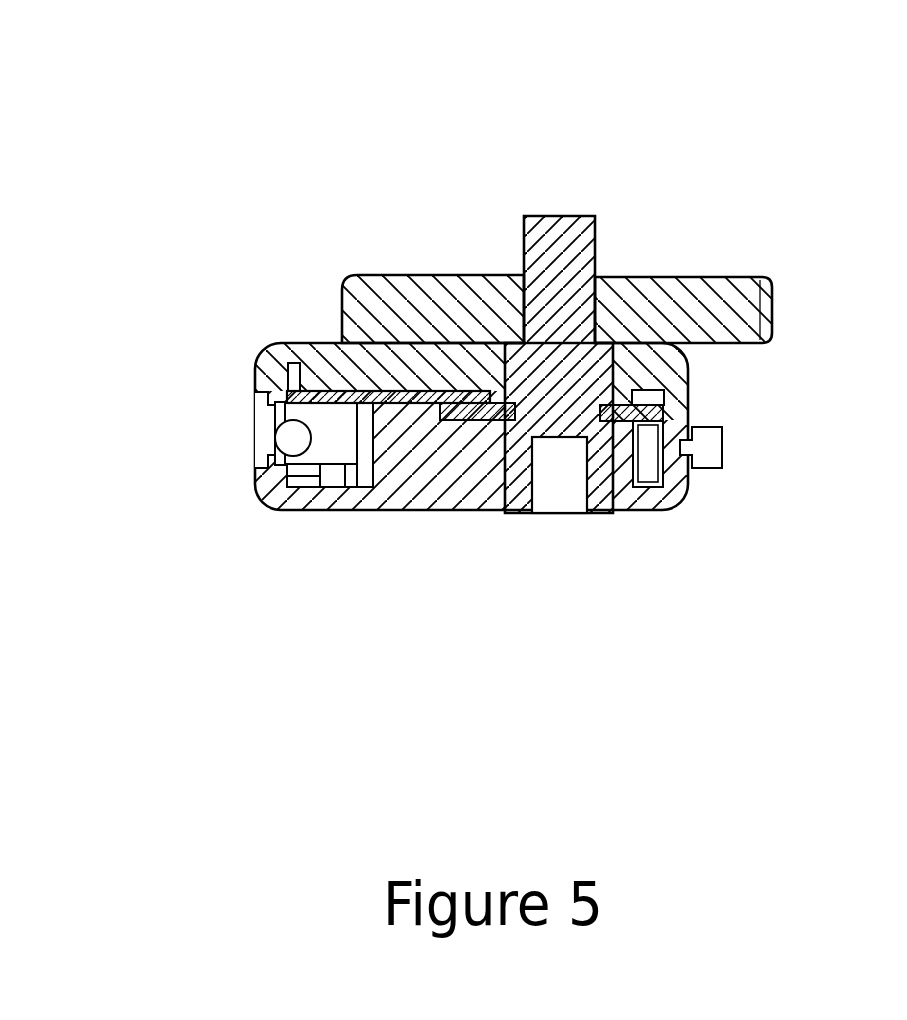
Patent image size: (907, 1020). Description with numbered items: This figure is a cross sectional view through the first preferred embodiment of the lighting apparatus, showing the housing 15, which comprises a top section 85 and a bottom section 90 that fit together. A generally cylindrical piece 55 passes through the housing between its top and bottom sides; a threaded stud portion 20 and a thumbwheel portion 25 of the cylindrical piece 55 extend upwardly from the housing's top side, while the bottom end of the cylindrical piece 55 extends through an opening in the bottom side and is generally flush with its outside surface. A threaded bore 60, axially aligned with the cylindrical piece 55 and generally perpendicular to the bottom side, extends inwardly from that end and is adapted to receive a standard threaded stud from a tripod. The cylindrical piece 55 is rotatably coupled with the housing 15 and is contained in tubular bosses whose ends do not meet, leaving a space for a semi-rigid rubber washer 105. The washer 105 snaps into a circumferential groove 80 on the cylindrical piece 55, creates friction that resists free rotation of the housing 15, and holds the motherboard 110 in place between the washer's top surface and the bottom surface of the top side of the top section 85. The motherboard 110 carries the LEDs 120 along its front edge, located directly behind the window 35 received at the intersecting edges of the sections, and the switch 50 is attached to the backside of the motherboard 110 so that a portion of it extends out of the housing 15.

The housing 15 is at (285, 300).
The threaded stud portion 20 is at (578, 228).
The thumbwheel portion 25 is at (687, 302).
The window 35 is at (263, 436).
The switch 50 is at (711, 447).
The cylindrical piece 55 is at (477, 253).
The threaded bore 60 is at (555, 493).
The circumferential groove 80 is at (690, 487).
The top section 85 is at (298, 357).
The bottom section 90 is at (299, 503).
The rubber washer 105 is at (497, 413).
The motherboard 110 is at (358, 395).
The LEDs 120 is at (328, 440).